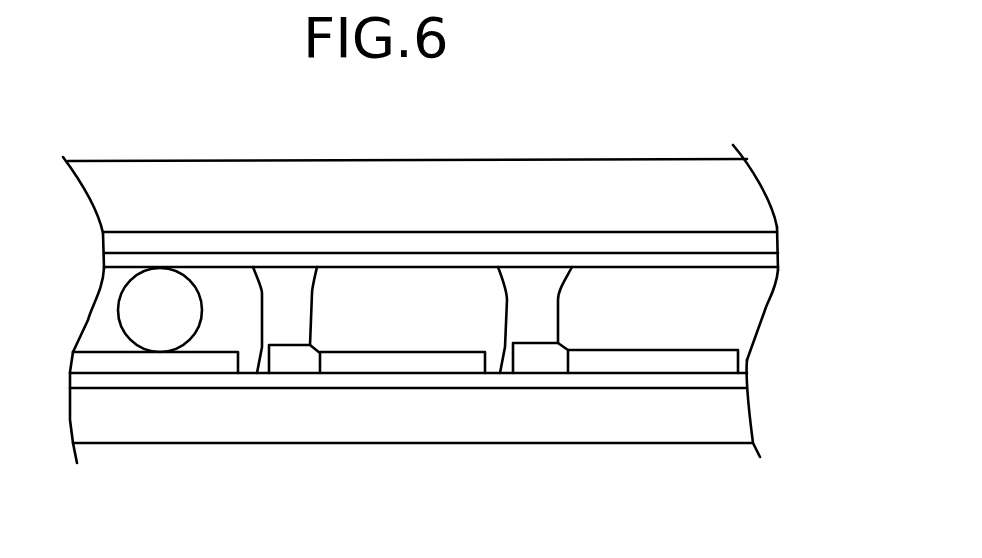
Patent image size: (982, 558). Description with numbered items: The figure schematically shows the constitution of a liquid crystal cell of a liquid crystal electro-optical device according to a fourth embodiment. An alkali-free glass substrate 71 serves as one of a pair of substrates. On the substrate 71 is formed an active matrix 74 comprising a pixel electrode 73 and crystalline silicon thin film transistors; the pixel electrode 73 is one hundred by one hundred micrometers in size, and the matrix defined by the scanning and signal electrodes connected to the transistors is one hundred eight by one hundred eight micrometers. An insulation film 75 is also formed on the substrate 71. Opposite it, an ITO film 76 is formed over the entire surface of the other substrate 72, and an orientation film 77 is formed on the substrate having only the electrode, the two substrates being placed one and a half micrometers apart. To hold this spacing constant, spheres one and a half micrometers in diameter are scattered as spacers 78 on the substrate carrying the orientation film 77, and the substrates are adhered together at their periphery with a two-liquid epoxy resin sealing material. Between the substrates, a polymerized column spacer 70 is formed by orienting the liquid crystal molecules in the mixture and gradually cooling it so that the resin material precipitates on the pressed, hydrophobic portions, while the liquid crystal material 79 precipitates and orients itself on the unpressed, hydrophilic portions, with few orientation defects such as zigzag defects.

The polymerized column spacer 70 is at (285, 295).
The alkali-free glass substrate 71 is at (678, 418).
The other substrate 72 is at (607, 178).
The pixel electrode 73 is at (698, 358).
The active matrix 74 is at (535, 357).
The insulation film 75 is at (440, 378).
The ITO film 76 is at (690, 238).
The orientation film 77 is at (743, 250).
The liquid crystal material 79 is at (708, 297).
The spacers 78 is at (165, 332).